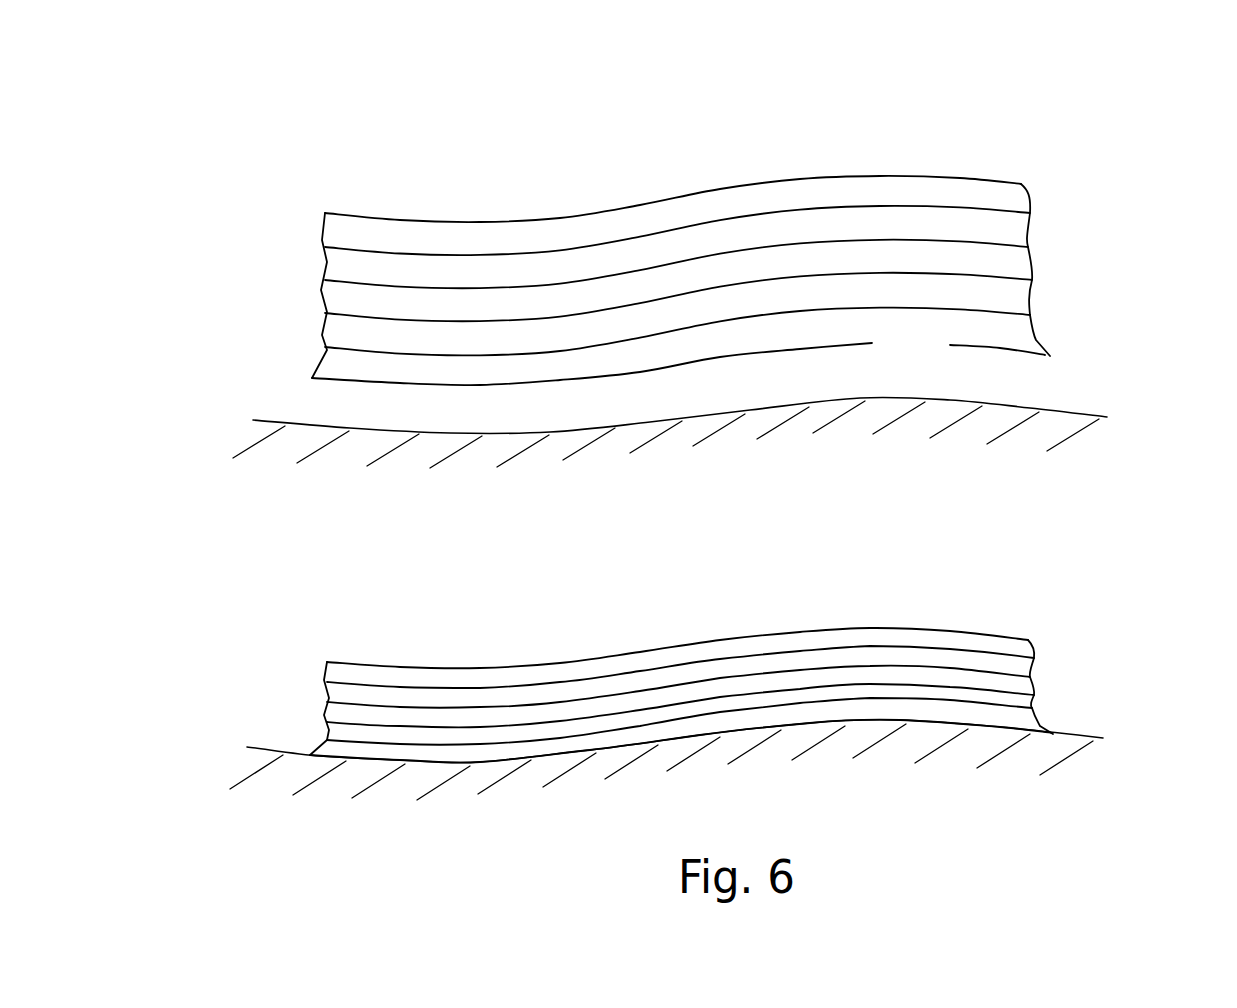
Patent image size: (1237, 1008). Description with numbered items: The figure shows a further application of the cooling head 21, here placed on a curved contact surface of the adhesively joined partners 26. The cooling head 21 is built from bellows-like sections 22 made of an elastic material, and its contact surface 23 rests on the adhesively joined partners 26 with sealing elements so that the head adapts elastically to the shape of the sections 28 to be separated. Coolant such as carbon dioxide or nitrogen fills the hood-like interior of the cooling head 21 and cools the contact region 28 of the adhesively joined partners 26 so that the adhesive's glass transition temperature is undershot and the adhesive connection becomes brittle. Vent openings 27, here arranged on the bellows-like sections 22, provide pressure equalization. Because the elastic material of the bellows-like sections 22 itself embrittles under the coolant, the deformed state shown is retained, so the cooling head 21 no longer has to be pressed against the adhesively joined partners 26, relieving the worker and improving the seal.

The cooling head 21 is at (695, 168).
The bellows-like sections 22 is at (967, 263).
The contact surface of the cooling head 23 is at (1032, 338).
The adhesively joined partners 26 is at (292, 423).
The vent openings 27 is at (1032, 277).
The sections to be separated 28 is at (938, 383).